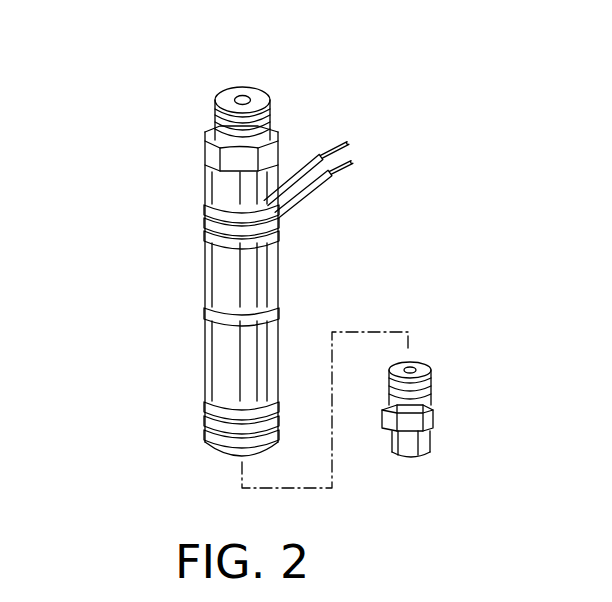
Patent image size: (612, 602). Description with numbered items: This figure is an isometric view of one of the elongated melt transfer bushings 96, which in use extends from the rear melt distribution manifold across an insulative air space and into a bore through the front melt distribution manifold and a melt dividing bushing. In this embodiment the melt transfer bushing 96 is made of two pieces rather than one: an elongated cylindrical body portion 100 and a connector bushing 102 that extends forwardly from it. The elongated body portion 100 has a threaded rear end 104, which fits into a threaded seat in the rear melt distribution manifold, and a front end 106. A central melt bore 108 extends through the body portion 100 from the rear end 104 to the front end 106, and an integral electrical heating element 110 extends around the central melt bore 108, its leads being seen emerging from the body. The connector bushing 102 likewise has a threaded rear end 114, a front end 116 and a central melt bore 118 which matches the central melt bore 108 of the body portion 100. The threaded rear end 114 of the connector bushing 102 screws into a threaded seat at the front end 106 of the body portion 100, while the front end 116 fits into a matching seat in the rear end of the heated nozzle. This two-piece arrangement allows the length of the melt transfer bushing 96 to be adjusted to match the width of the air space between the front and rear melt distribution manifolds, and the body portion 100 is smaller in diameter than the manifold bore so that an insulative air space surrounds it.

The melt transfer bushing 96 is at (138, 197).
The elongated cylindrical body portion 100 is at (228, 268).
The connector bushing 102 is at (436, 414).
The threaded rear end 104 is at (272, 113).
The front end 106 is at (228, 455).
The central melt bore 108 is at (241, 96).
The integral electrical heating element 110 is at (282, 232).
The threaded rear end 114 is at (432, 386).
The front end 116 is at (418, 457).
The central melt bore 118 is at (411, 367).